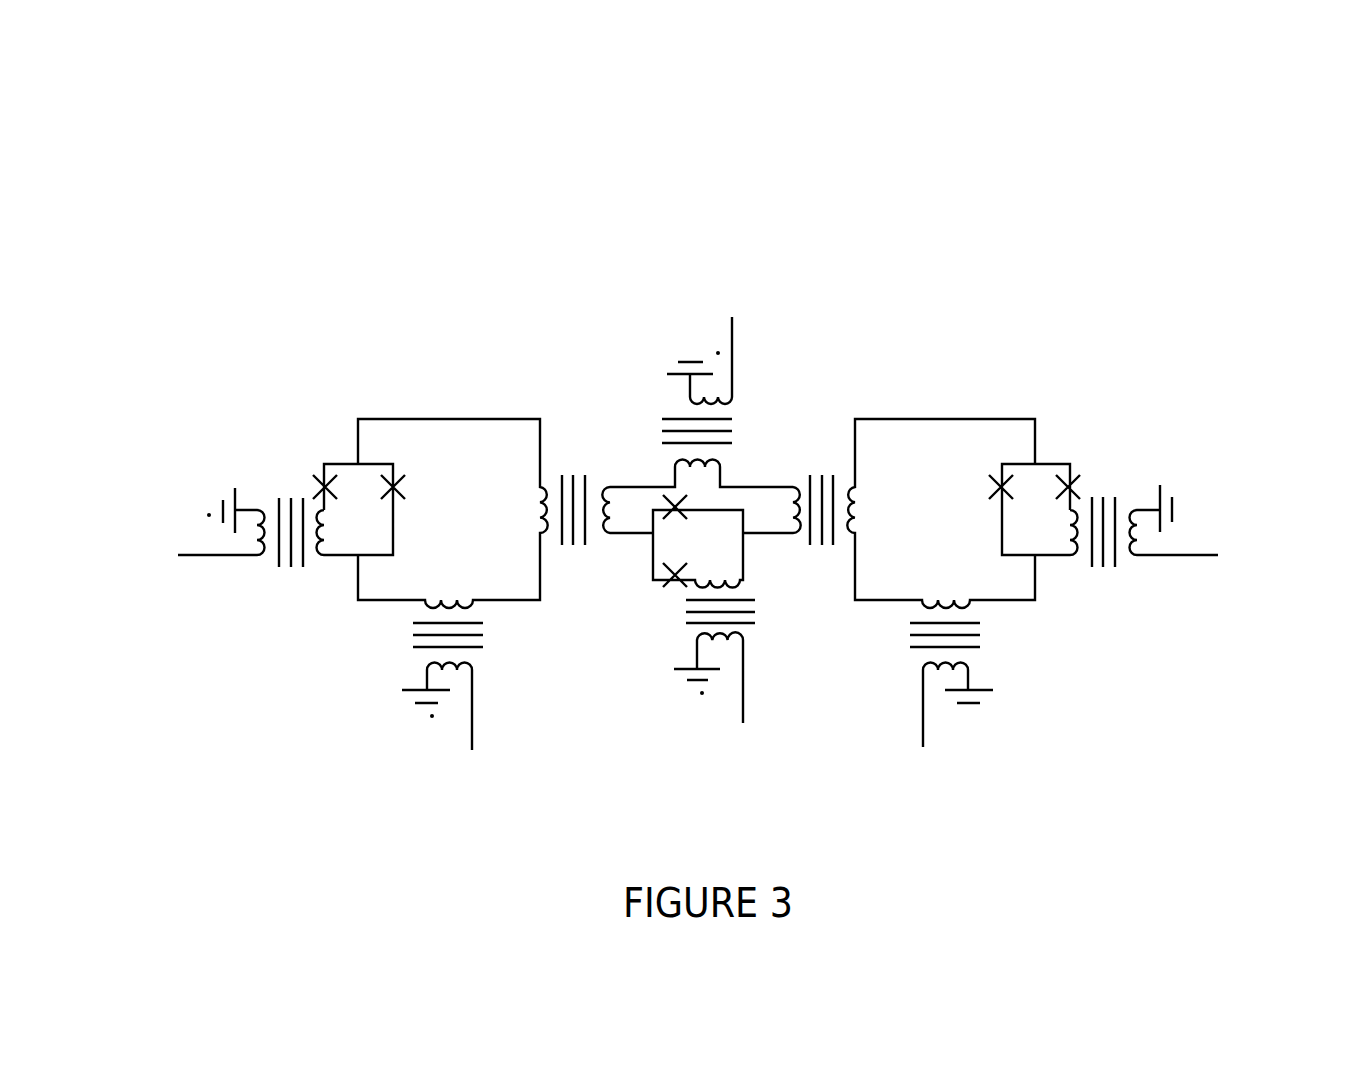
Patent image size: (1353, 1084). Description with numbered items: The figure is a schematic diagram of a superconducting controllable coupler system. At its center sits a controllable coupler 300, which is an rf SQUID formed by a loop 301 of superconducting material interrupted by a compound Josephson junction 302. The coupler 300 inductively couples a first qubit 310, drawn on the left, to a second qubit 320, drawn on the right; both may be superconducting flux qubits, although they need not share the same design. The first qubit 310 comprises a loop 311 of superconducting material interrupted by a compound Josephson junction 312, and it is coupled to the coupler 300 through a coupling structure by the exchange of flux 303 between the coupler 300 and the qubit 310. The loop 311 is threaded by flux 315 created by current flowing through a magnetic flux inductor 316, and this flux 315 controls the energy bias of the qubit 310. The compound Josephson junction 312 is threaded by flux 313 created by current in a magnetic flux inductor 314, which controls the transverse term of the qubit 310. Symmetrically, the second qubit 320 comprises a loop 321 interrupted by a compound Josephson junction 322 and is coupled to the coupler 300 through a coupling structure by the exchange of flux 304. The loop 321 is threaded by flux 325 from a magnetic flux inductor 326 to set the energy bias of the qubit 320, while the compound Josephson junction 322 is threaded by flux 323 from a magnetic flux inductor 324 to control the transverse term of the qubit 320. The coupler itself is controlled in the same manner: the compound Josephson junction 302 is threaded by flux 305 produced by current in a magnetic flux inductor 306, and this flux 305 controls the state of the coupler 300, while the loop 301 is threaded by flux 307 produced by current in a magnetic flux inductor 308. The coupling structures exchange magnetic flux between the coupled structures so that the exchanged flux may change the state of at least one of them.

The controllable coupler 300 is at (629, 461).
The loop 301 is at (765, 476).
The compound Josephson junction 302 is at (653, 584).
The flux 303 is at (577, 471).
The flux 304 is at (822, 471).
The flux 305 is at (756, 630).
The magnetic flux inductor 306 is at (719, 684).
The flux 307 is at (733, 408).
The magnetic flux inductor 308 is at (696, 360).
The first qubit 310 is at (361, 626).
The loop 311 is at (462, 417).
The compound Josephson junction 312 is at (349, 460).
The flux 313 is at (294, 496).
The magnetic flux inductor 314 is at (238, 560).
The flux 315 is at (419, 649).
The magnetic flux inductor 316 is at (451, 719).
The second qubit 320 is at (1036, 625).
The loop 321 is at (937, 417).
The compound Josephson junction 322 is at (1047, 460).
The flux 323 is at (1105, 495).
The magnetic flux inductor 324 is at (1159, 560).
The flux 325 is at (977, 650).
The magnetic flux inductor 326 is at (946, 720).